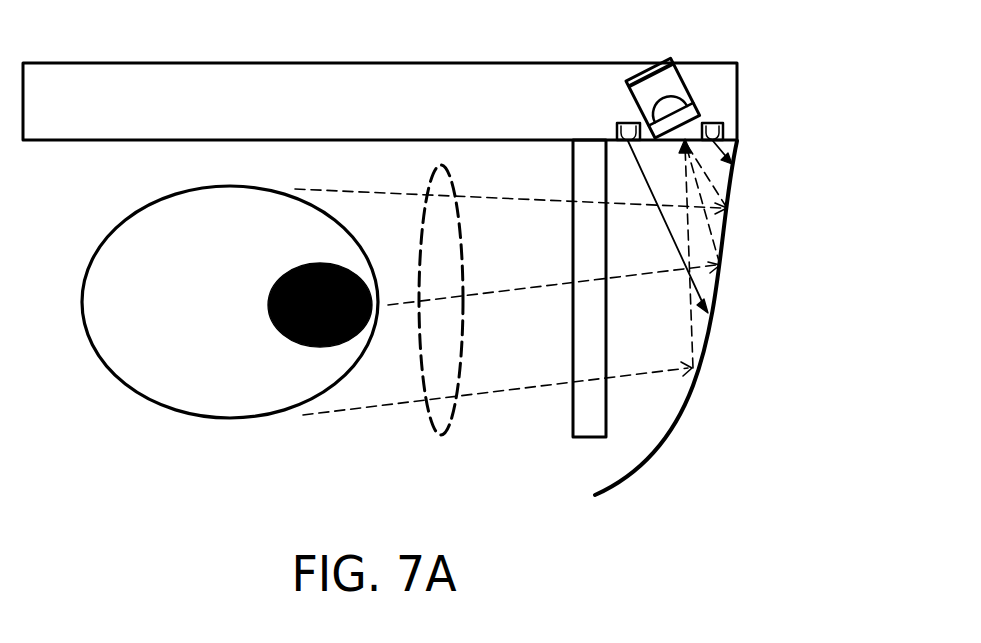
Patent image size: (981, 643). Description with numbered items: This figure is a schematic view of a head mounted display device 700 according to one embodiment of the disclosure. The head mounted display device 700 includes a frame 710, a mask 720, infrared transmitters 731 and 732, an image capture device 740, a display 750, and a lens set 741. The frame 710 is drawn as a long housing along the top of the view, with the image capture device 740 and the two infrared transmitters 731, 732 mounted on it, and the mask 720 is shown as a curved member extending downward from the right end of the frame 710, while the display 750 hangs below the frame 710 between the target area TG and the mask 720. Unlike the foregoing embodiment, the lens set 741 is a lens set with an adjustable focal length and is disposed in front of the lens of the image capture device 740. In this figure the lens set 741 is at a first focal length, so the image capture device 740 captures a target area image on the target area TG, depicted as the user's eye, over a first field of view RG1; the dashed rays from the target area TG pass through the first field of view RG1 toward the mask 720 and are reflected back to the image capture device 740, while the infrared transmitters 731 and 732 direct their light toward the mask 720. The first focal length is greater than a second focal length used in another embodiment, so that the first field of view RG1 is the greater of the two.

The head mounted display device 700 is at (783, 548).
The frame 710 is at (292, 62).
The mask 720 is at (663, 452).
The infrared transmitter 731 is at (617, 133).
The infrared transmitter 732 is at (723, 128).
The image capture device 740 is at (633, 75).
The lens set 741 is at (708, 108).
The display 750 is at (570, 440).
The first field of view RG1 is at (462, 241).
The target area TG is at (83, 362).